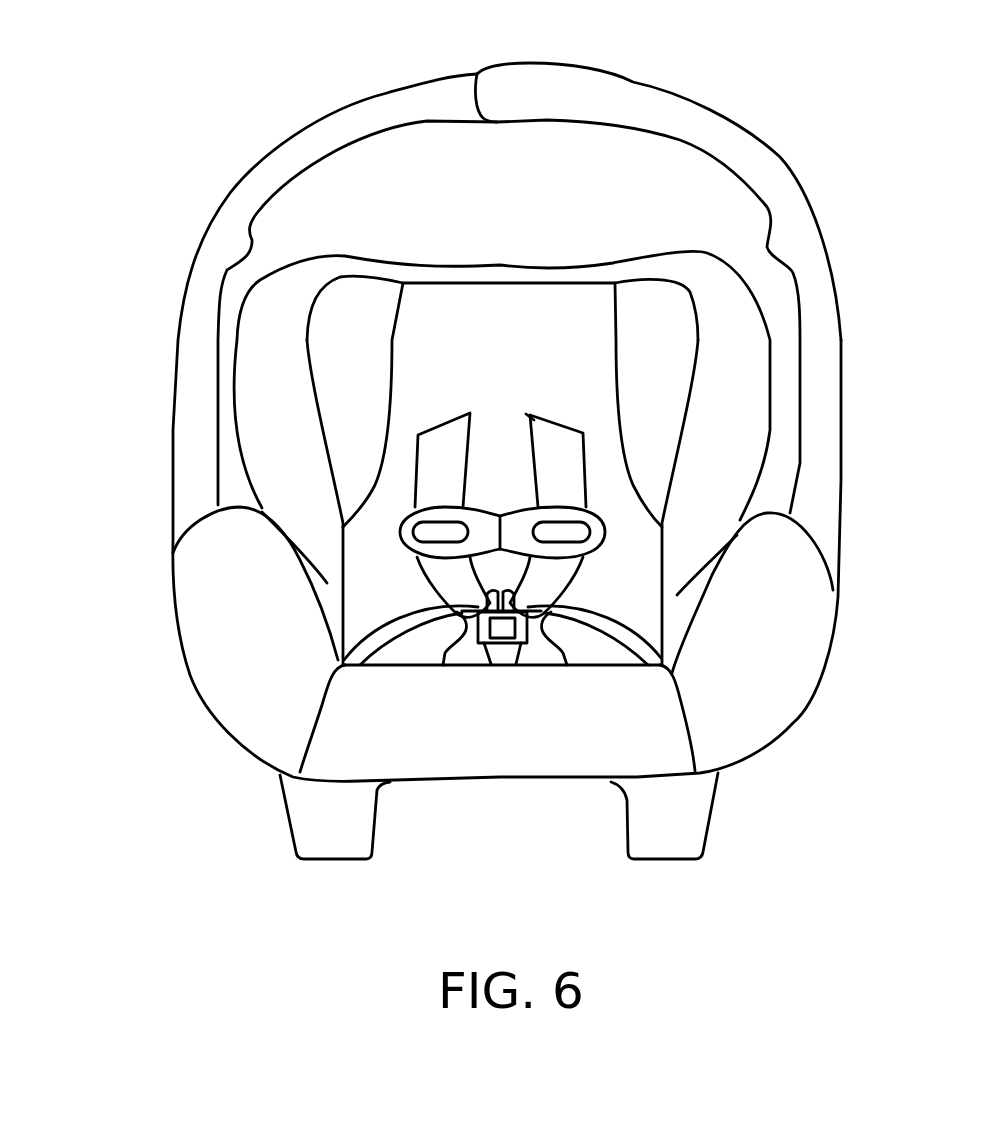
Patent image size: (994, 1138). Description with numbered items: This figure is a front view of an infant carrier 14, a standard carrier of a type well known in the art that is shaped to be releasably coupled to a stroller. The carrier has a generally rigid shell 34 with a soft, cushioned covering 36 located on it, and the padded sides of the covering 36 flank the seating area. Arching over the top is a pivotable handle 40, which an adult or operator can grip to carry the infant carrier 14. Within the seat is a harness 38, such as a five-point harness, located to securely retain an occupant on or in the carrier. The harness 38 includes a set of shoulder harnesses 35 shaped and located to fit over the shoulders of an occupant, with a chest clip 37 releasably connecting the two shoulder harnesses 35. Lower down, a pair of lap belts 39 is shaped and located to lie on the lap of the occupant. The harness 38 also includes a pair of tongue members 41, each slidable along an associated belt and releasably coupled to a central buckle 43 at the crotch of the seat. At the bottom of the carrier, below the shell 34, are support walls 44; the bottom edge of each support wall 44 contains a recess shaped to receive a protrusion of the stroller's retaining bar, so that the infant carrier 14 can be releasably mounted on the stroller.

The infant carrier 14 is at (136, 340).
The shell 34 is at (717, 775).
The shoulder harnesses 35 is at (440, 445).
The cushioned covering 36 is at (767, 625).
The chest clip 37 is at (488, 518).
The harness 38 is at (545, 416).
The lap belts 39 is at (400, 623).
The pivotable handle 40 is at (632, 90).
The tongue members 41 is at (443, 665).
The buckle 43 is at (503, 645).
The support wall 44 is at (323, 817).